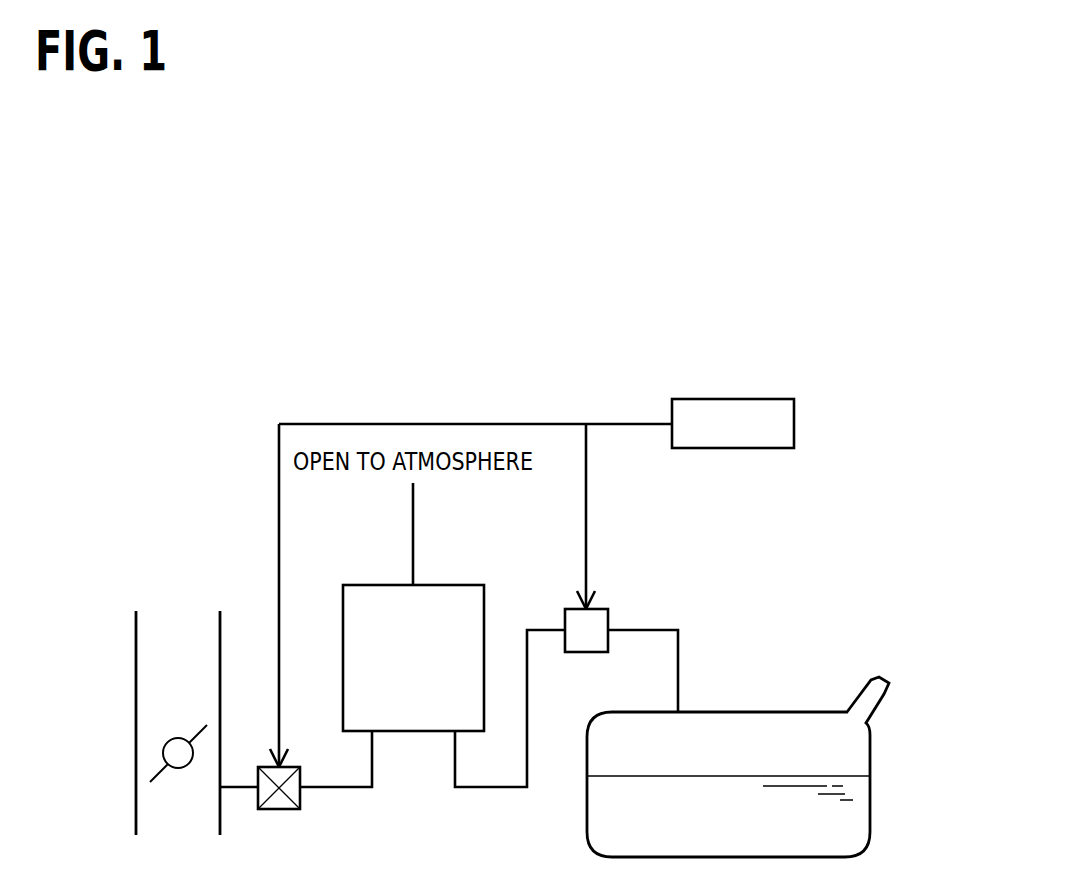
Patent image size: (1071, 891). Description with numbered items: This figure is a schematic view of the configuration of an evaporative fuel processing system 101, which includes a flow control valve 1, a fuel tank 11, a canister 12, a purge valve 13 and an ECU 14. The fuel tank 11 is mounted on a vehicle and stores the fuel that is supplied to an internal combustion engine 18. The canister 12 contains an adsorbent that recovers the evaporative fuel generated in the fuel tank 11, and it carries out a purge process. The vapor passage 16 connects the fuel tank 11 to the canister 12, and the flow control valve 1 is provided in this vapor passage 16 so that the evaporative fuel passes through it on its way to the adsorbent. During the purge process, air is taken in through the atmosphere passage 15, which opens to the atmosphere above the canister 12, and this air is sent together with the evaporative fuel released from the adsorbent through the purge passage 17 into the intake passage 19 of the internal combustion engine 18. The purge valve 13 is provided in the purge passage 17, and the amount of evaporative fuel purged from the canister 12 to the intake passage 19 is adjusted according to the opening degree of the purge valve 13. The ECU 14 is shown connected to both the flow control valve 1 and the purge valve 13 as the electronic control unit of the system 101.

The evaporative fuel processing system 101 is at (846, 323).
The flow control valve 1 is at (600, 614).
The fuel tank 11 is at (857, 752).
The canister 12 is at (466, 593).
The purge valve 13 is at (277, 810).
The ECU 14 is at (783, 424).
The atmosphere passage 15 is at (415, 510).
The vapor passage 16 is at (677, 652).
The purge passage 17 is at (342, 790).
The internal combustion engine 18 is at (136, 676).
The intake passage 19 is at (157, 812).